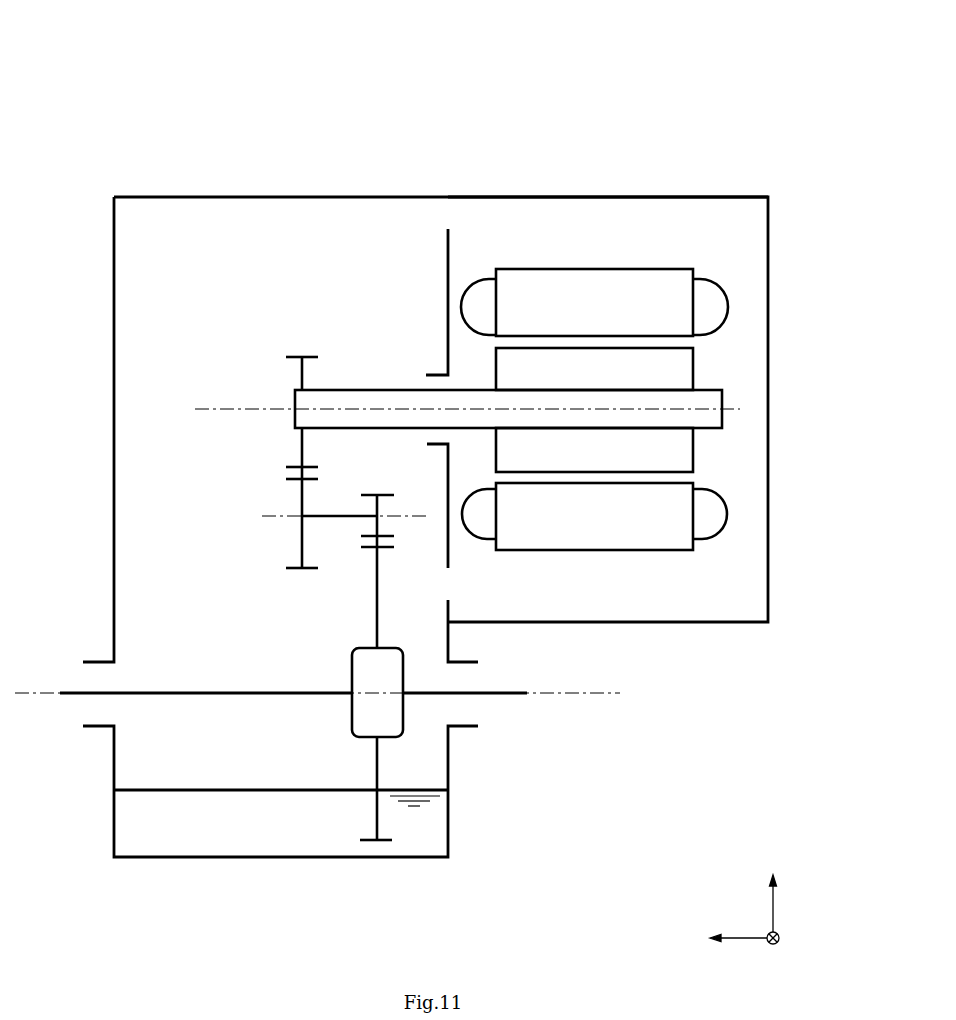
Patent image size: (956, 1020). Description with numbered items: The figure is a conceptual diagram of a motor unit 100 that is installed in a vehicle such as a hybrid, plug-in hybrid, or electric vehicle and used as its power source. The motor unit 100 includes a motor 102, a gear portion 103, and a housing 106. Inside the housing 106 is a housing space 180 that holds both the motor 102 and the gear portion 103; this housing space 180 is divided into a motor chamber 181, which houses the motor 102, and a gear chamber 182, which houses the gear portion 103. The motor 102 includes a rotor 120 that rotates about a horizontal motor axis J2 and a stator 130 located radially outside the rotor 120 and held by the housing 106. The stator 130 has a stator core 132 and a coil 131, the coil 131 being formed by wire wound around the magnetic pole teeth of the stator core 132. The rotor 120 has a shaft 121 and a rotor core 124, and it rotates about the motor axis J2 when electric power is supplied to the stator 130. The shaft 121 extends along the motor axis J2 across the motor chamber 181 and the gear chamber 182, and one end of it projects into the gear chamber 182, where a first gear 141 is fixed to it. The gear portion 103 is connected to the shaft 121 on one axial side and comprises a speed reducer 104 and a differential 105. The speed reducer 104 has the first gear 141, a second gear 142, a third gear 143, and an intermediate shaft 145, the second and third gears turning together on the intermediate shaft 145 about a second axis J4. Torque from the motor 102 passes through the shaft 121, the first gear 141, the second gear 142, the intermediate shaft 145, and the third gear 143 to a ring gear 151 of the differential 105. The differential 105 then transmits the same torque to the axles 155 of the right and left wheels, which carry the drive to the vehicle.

The motor unit 100 is at (108, 113).
The motor 102 is at (656, 347).
The gear portion 103 is at (176, 352).
The speed reducer 104 is at (265, 566).
The differential 105 is at (349, 748).
The housing 106 is at (744, 188).
The rotor 120 is at (705, 349).
The shaft 121 is at (384, 390).
The rotor core 124 is at (680, 363).
The stator 130 is at (733, 278).
The coil 131 is at (727, 313).
The stator core 132 is at (652, 288).
The first gear 141 is at (300, 355).
The second gear 142 is at (296, 570).
The third gear 143 is at (368, 494).
The intermediate shaft 145 is at (343, 518).
The ring gear 151 is at (368, 842).
The axles 155 is at (503, 697).
The housing space 180 is at (608, 234).
The motor chamber 181 is at (557, 228).
The gear chamber 182 is at (291, 228).
The motor axis J2 is at (729, 402).
The counter axis J4 is at (278, 508).